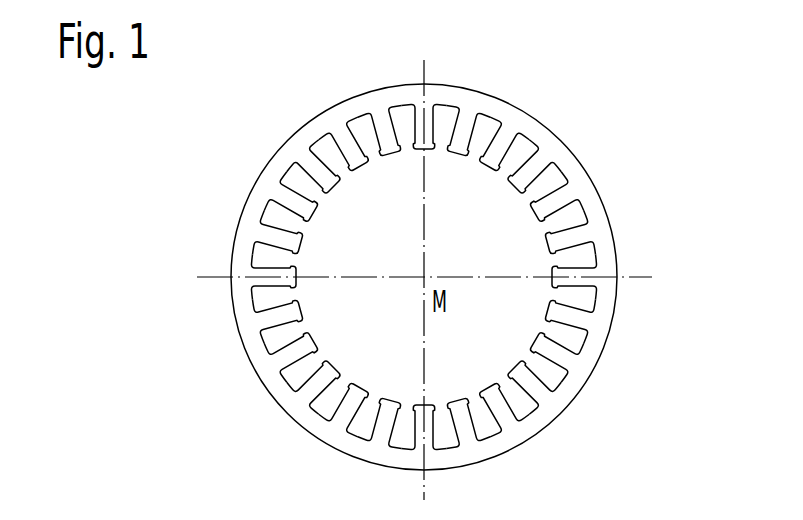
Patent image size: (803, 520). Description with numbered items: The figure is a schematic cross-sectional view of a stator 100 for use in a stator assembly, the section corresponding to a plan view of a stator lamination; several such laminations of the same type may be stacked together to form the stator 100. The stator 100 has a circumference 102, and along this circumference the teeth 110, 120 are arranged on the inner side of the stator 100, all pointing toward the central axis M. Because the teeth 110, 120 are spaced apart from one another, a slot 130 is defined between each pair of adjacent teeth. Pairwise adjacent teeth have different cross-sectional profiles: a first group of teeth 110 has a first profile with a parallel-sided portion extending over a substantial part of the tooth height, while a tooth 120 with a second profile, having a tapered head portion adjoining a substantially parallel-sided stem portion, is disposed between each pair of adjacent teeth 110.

The stator 100 is at (310, 120).
The circumference 102 is at (233, 247).
The teeth 110 is at (552, 200).
The tooth 120 is at (434, 110).
The slot 130 is at (587, 357).